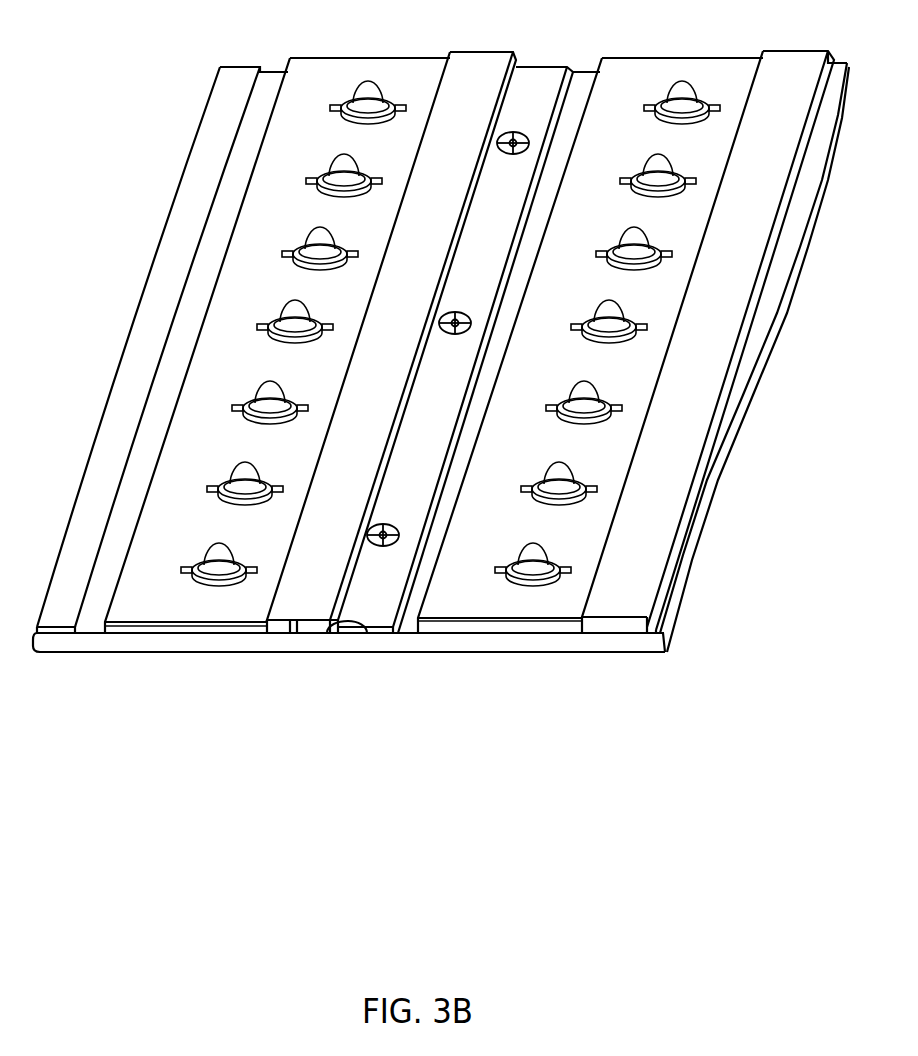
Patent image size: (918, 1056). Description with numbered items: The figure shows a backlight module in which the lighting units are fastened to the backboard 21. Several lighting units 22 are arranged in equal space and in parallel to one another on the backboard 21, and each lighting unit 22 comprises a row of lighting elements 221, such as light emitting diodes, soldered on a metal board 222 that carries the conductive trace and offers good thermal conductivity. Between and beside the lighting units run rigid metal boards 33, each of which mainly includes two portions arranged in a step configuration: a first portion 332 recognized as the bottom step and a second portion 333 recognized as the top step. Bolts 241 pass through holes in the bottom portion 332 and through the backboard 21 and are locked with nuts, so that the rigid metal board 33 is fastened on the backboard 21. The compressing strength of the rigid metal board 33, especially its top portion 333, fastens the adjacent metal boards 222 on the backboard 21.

The backboard 21 is at (115, 642).
The lighting unit 22 is at (449, 345).
The lighting element 221 is at (532, 558).
The metal board 222 is at (550, 632).
The bolt 241 is at (510, 132).
The rigid metal board 33 is at (473, 70).
The first portion 332 is at (327, 623).
The second portion 333 is at (302, 603).